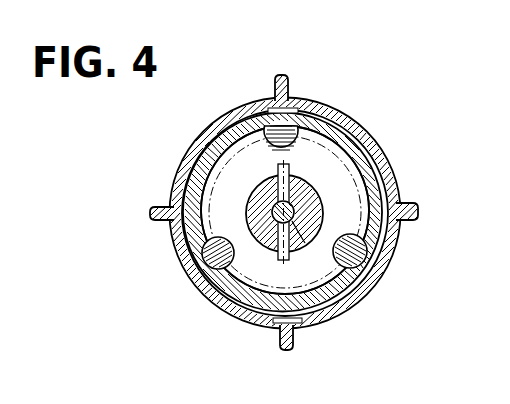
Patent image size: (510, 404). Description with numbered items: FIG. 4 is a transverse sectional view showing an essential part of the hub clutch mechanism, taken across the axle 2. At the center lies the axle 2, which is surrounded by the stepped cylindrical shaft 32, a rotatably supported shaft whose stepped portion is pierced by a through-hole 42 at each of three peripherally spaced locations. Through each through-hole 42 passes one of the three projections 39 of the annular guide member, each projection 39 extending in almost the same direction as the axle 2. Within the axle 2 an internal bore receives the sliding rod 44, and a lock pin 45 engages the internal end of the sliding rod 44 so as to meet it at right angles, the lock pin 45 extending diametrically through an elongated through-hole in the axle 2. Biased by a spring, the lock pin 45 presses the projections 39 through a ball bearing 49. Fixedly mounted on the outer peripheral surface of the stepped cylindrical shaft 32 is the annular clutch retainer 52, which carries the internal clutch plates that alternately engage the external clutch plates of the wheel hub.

The axle 2 is at (255, 207).
The stepped cylindrical shaft 32 is at (255, 106).
The projections 39 is at (291, 134).
The through-hole 42 is at (275, 152).
The sliding rod 44 is at (292, 254).
The lock pin 45 is at (292, 167).
The ball bearing 49 is at (364, 157).
The annular clutch retainer 52 is at (347, 122).